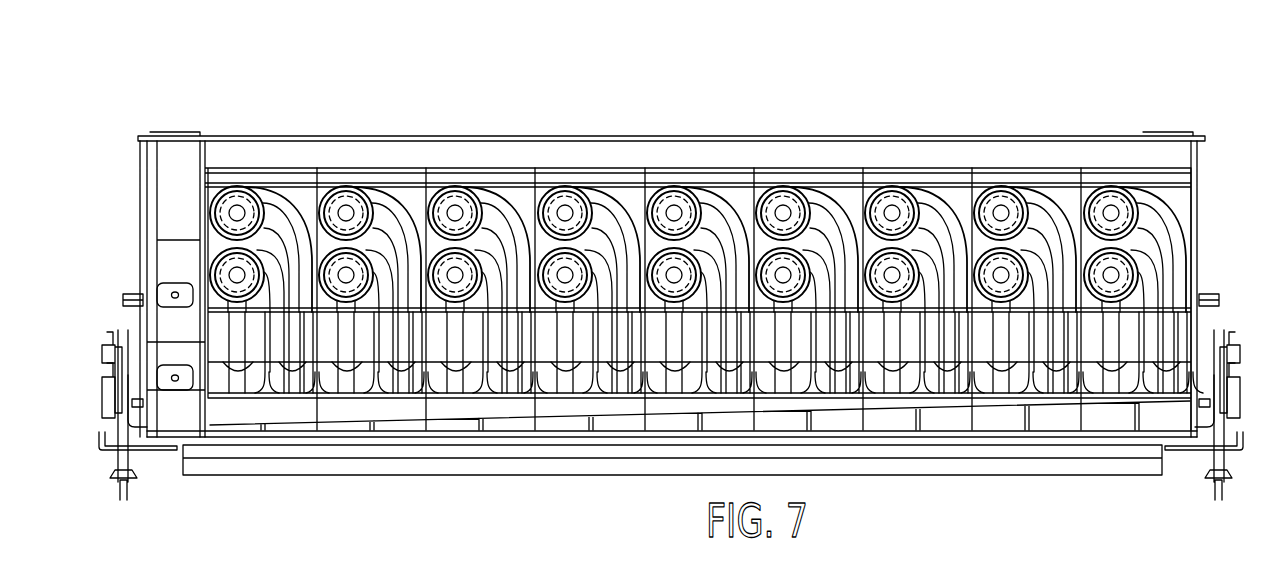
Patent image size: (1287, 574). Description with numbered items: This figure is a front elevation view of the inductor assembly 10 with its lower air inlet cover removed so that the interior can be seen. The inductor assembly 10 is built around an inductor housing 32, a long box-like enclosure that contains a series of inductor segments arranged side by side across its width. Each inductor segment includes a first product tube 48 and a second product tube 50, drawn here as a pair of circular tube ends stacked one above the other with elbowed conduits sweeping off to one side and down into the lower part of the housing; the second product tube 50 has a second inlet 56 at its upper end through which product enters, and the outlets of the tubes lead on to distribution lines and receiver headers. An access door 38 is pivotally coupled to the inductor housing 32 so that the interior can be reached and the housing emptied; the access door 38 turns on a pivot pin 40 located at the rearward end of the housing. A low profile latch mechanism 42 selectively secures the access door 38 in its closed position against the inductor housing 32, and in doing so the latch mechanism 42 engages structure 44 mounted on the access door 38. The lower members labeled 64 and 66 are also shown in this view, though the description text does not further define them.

The inductor assembly 10 is at (102, 128).
The inductor housing 32 is at (1068, 136).
The access door 38 is at (162, 456).
The pivot pin 40 is at (99, 349).
The latch mechanism 42 is at (101, 416).
The structure 44 is at (102, 452).
The first product tube 48 is at (455, 272).
The second product tube 50 is at (364, 188).
The second inlet 56 is at (785, 208).
The bottom plate 64 is at (261, 427).
The baffle 66 is at (502, 410).